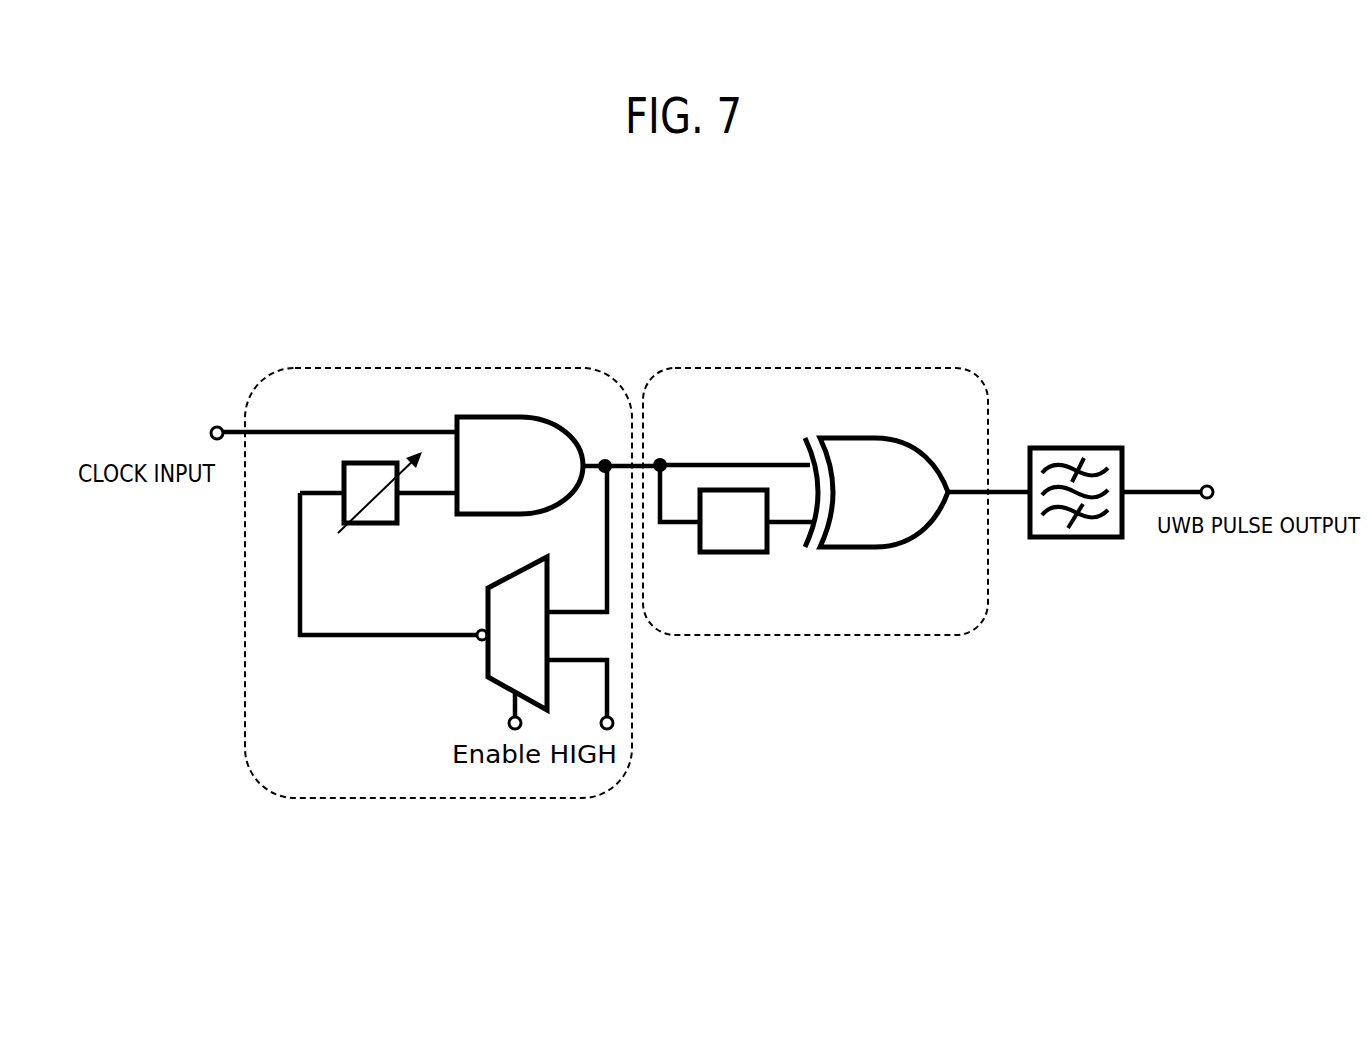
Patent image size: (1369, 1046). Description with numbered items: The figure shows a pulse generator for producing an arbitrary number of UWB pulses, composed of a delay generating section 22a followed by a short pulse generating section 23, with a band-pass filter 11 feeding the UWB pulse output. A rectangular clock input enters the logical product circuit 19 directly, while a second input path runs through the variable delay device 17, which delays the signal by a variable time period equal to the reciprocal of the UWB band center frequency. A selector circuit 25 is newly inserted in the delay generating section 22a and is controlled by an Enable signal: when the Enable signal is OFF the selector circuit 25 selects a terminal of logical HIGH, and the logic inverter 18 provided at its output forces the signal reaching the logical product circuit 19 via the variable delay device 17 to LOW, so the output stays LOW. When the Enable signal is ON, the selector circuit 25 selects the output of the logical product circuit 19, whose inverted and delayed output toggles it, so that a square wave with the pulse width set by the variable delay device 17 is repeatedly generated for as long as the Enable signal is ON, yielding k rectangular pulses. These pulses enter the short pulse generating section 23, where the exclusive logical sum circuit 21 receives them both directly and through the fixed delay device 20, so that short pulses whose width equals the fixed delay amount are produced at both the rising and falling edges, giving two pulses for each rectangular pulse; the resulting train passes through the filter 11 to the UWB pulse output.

The band-pass filter 11 is at (1073, 540).
The variable delay device 17 is at (366, 525).
The logic inverter 18 is at (480, 641).
The logical product (AND) circuit 19 is at (496, 417).
The fixed delay device 20 is at (738, 554).
The exclusive logical sum (EXOR) circuit 21 is at (858, 549).
The delay generating section 22a is at (430, 368).
The short pulse generating section 23 is at (802, 368).
The selector circuit 25 is at (517, 573).